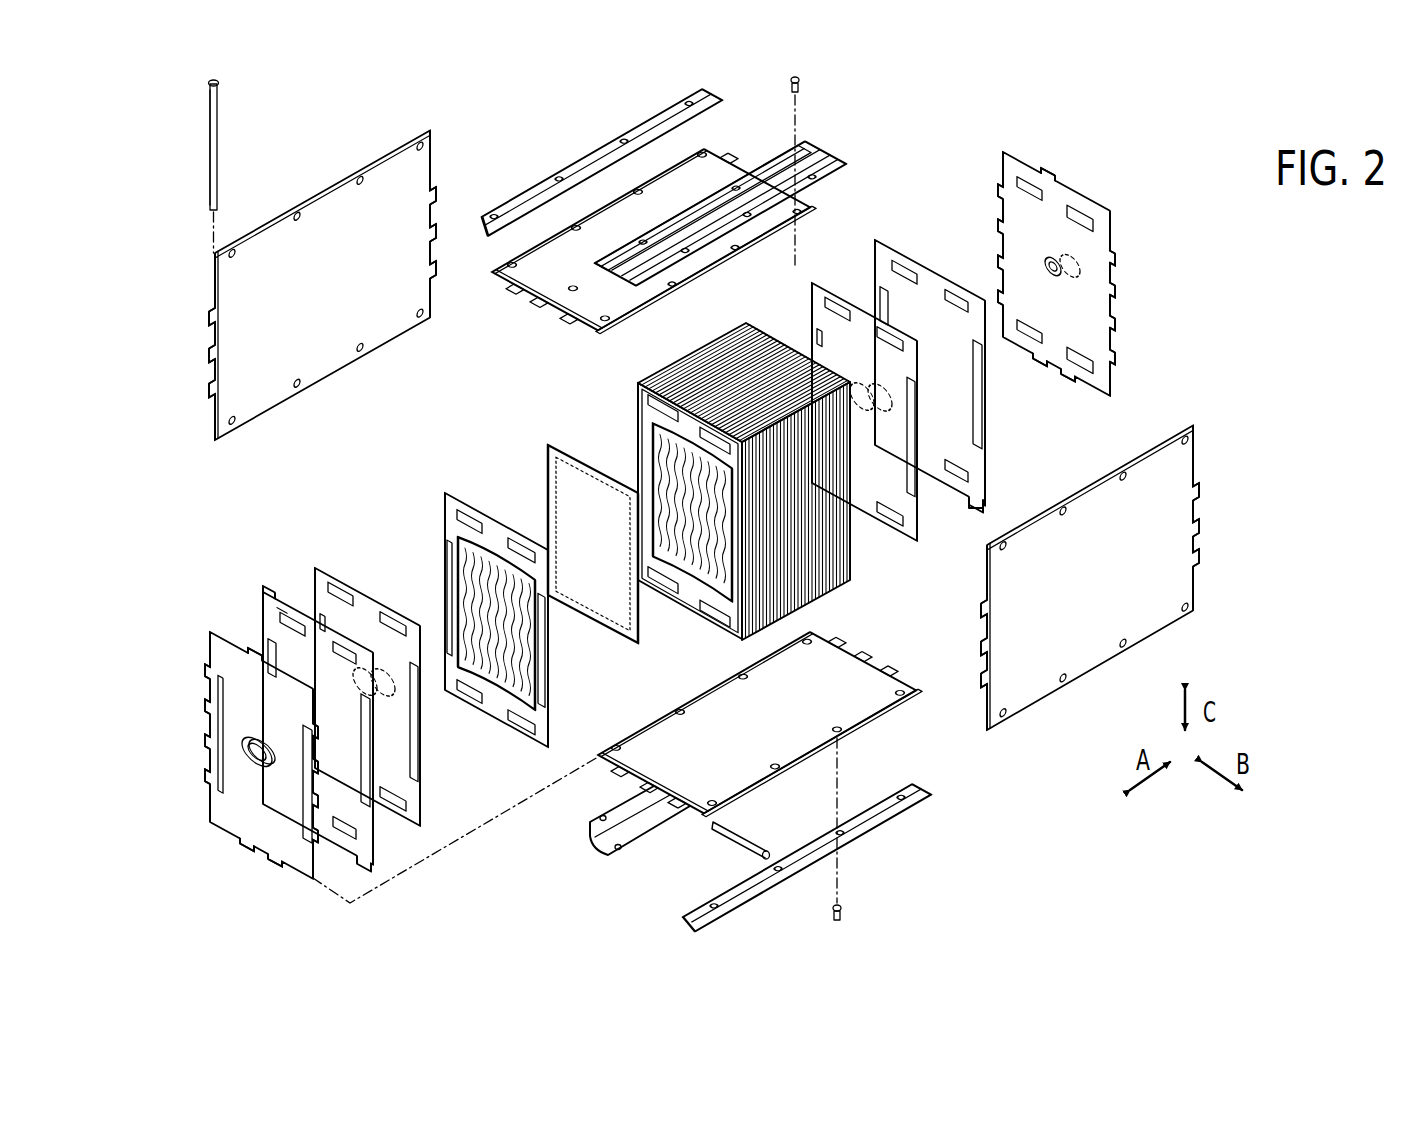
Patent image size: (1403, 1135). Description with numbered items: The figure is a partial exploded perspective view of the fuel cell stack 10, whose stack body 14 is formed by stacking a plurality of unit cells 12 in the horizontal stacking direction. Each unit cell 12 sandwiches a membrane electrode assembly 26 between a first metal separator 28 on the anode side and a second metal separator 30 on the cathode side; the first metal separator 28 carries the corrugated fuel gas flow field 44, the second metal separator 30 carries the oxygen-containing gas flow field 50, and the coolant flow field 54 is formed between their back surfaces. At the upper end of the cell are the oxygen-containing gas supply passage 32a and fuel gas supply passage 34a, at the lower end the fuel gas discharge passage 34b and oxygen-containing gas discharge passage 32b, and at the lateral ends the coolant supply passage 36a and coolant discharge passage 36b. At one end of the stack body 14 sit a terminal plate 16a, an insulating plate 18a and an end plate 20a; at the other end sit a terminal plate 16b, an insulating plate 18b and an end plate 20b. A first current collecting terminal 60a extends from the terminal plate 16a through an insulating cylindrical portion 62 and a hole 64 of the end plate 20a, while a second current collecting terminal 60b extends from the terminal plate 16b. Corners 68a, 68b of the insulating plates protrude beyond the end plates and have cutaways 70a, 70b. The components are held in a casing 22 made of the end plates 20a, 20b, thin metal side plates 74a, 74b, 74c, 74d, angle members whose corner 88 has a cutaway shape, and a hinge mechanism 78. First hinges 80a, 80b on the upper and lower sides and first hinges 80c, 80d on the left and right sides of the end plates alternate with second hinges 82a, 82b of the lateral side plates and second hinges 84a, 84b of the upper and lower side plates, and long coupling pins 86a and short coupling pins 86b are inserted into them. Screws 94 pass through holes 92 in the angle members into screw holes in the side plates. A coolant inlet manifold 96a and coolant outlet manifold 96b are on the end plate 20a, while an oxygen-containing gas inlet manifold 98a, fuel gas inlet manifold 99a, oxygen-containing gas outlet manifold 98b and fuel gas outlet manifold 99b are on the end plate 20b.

The fuel cell stack 10 is at (1350, 316).
The unit cell 12 is at (850, 553).
The stack body 14 is at (765, 481).
The terminal plate 16a is at (343, 656).
The terminal plate 16b is at (864, 373).
The insulating plate 18a is at (282, 706).
The insulating plate 18b is at (918, 262).
The end plate 20a is at (298, 749).
The end plate 20b is at (1054, 267).
The casing 22 is at (1200, 590).
The membrane electrode assembly 26 is at (548, 446).
The first metal separator 28 is at (657, 502).
The second metal separator 30 is at (476, 623).
The oxygen-containing gas supply passage 32a is at (469, 522).
The oxygen-containing gas discharge passage 32b is at (521, 722).
The fuel gas supply passage 34a is at (521, 550).
The fuel gas discharge passage 34b is at (469, 692).
The coolant supply passage 36a is at (449, 598).
The coolant discharge passage 36b is at (541, 650).
The fuel gas flow field 44 is at (692, 511).
The oxygen-containing gas flow field 50 is at (496, 622).
The coolant flow field 54 is at (445, 546).
The first current collecting terminal 60a is at (374, 682).
The second current collecting terminal 60b is at (871, 397).
The insulating cylindrical portion 62 is at (258, 752).
The hole 64 is at (257, 752).
The corner 68a is at (282, 611).
The corner 68b is at (990, 498).
The cutaway 70a is at (269, 592).
The cutaway 70b is at (995, 504).
The side plate 74a is at (1130, 563).
The side plate 74b is at (650, 210).
The side plate 74c is at (322, 285).
The side plate 74d is at (756, 770).
The hinge mechanism 78 is at (207, 142).
The first hinge 80a is at (261, 755).
The first hinge 80b is at (1054, 273).
The first hinge 80c is at (261, 753).
The first hinge 80d is at (1056, 275).
The second hinge 82a is at (1090, 583).
The second hinge 82b is at (434, 244).
The second hinge 84a is at (649, 238).
The second hinge 84b is at (757, 722).
The long coupling pin 86a is at (213, 165).
The short coupling pin 86b is at (740, 838).
The corner 88 is at (680, 152).
The hole 92 is at (703, 207).
The screw 94 is at (800, 87).
The coolant inlet manifold 96a is at (220, 734).
The coolant outlet manifold 96b is at (307, 784).
The oxygen-containing gas inlet manifold 98a is at (1029, 189).
The oxygen-containing gas outlet manifold 98b is at (1080, 360).
The fuel gas inlet manifold 99a is at (1080, 218).
The fuel gas outlet manifold 99b is at (1029, 332).